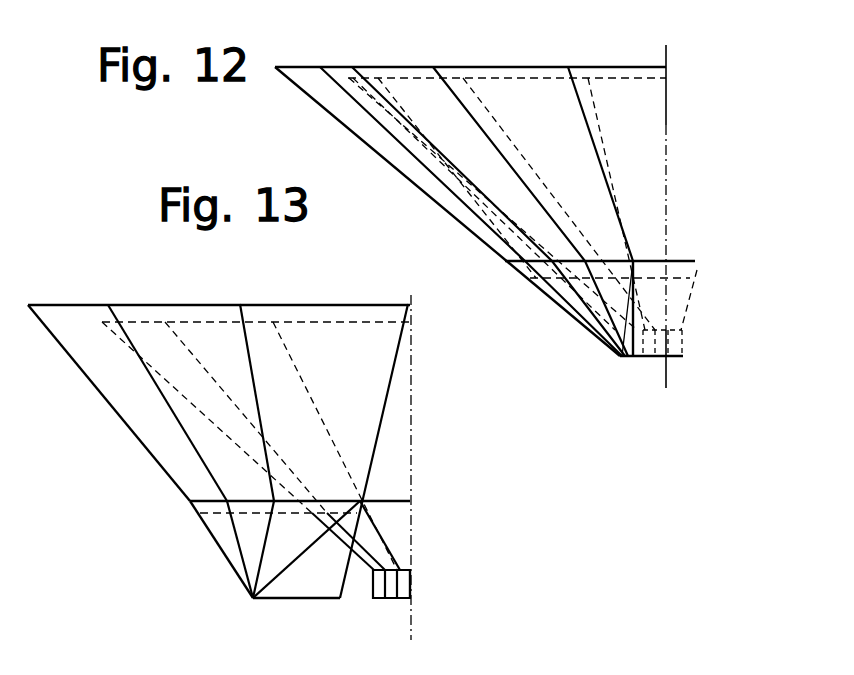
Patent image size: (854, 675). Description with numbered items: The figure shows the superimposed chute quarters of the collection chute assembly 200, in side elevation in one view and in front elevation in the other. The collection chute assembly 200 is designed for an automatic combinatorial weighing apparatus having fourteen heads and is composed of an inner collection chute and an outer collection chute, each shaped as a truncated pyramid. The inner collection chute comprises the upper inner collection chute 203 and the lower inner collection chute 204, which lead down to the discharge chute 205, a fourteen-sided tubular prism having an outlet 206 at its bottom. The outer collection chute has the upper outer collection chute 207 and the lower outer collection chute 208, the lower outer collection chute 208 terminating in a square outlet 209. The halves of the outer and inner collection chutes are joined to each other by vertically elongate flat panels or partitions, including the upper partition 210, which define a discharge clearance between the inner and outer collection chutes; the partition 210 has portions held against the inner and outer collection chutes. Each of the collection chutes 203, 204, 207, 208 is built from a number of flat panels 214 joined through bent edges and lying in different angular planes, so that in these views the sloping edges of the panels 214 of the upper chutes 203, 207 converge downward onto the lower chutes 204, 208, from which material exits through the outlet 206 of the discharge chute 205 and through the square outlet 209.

In FIG. 12, the collection chute assembly 200 is at (716, 14).
In FIG. 13, the collection chute assembly 200 is at (95, 252).
In FIG. 12, the upper inner collection chute 203 is at (532, 78).
In FIG. 13, the upper inner collection chute 203 is at (342, 304).
In FIG. 12, the lower inner collection chute 204 is at (520, 311).
In FIG. 13, the lower inner collection chute 204 is at (405, 497).
In FIG. 12, the discharge chute 205 is at (690, 338).
In FIG. 13, the discharge chute 205 is at (412, 582).
In FIG. 12, the outlet 206 is at (646, 362).
In FIG. 13, the outlet 206 is at (397, 601).
In FIG. 12, the upper outer collection chute 207 is at (290, 66).
In FIG. 13, the upper outer collection chute 207 is at (196, 304).
In FIG. 12, the lower outer collection chute 208 is at (655, 259).
In FIG. 13, the lower outer collection chute 208 is at (212, 540).
In FIG. 12, the square outlet 209 is at (672, 360).
In FIG. 13, the square outlet 209 is at (283, 601).
In FIG. 12, the upper partition 210 is at (418, 39).
In FIG. 13, the upper partition 210 is at (377, 427).
In FIG. 12, the flat panel 214 is at (697, 160).
In FIG. 13, the flat panel 214 is at (368, 360).